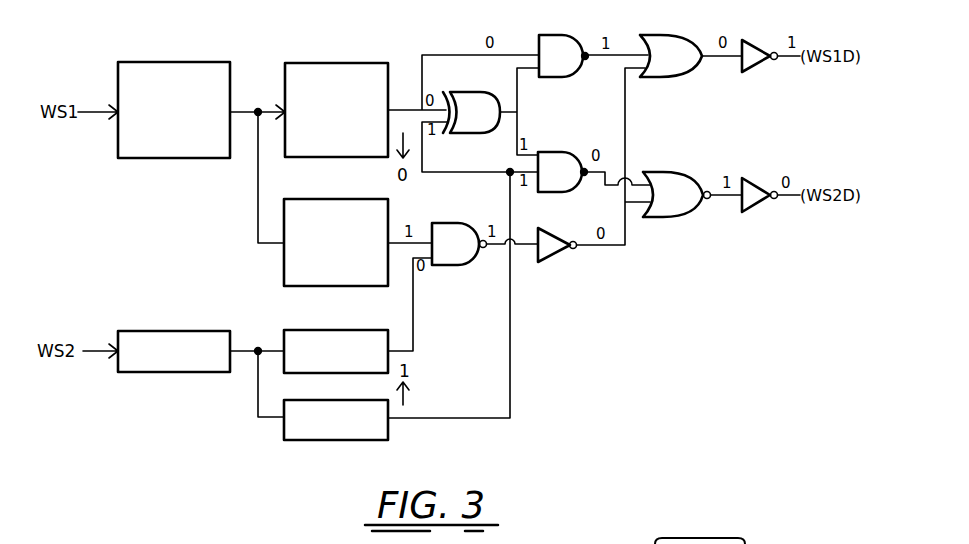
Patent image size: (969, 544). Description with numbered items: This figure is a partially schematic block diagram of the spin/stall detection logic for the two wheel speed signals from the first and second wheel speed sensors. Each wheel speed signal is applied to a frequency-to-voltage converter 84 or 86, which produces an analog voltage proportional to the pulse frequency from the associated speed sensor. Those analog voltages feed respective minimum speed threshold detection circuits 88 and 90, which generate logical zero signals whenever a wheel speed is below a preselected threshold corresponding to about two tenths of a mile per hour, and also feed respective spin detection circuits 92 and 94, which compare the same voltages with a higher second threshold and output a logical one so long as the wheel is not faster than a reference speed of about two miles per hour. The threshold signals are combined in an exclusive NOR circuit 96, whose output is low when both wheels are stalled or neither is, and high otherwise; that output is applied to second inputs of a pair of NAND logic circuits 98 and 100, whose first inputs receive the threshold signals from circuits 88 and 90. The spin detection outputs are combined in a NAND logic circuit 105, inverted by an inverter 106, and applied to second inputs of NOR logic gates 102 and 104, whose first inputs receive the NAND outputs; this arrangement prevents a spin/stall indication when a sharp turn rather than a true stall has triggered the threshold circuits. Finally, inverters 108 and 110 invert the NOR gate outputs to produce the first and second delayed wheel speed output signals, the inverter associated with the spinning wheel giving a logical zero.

The frequency-to-voltage converter 84 is at (158, 62).
The frequency-to-voltage converter 86 is at (148, 331).
The minimum speed threshold detection circuit 88 is at (310, 63).
The minimum speed threshold detection circuit 90 is at (358, 440).
The spin detection circuit 92 is at (313, 199).
The spin detection circuit 94 is at (322, 330).
The exclusive NOR circuit 96 is at (462, 92).
The NAND logic circuit 98 is at (575, 35).
The NAND logic circuit 100 is at (553, 152).
The NOR logic gate 102 is at (683, 35).
The NOR logic gate 104 is at (670, 172).
The NAND logic circuit 105 is at (447, 265).
The inverter 106 is at (553, 258).
The inverter 108 is at (765, 45).
The inverter 110 is at (748, 178).